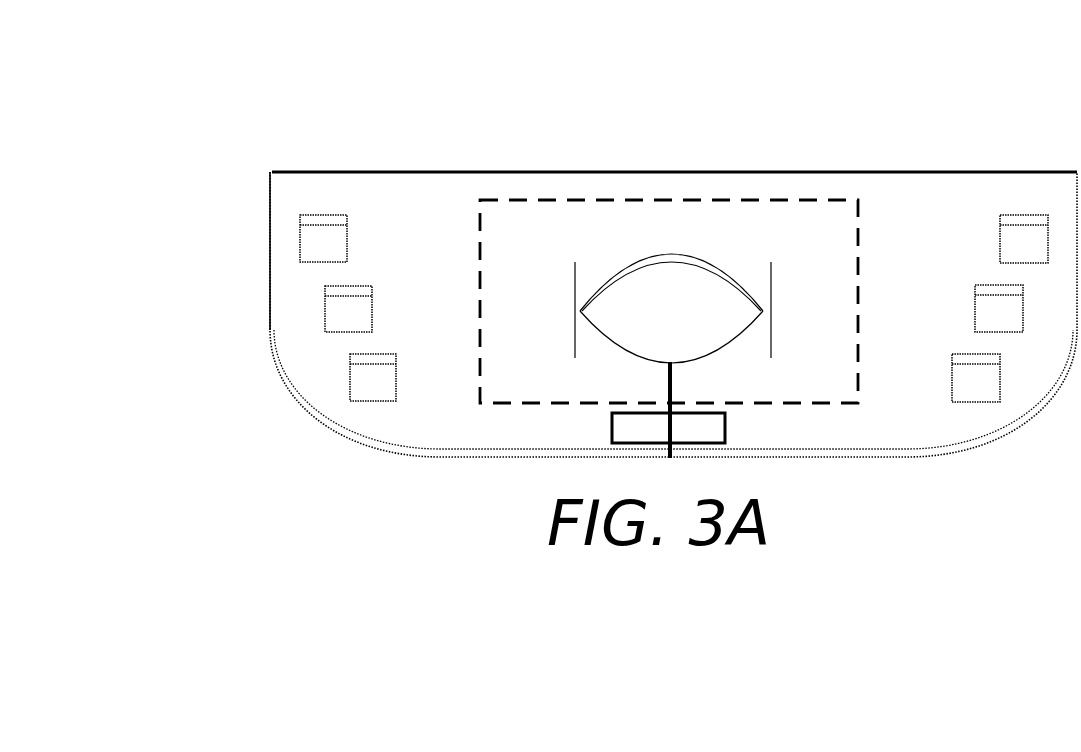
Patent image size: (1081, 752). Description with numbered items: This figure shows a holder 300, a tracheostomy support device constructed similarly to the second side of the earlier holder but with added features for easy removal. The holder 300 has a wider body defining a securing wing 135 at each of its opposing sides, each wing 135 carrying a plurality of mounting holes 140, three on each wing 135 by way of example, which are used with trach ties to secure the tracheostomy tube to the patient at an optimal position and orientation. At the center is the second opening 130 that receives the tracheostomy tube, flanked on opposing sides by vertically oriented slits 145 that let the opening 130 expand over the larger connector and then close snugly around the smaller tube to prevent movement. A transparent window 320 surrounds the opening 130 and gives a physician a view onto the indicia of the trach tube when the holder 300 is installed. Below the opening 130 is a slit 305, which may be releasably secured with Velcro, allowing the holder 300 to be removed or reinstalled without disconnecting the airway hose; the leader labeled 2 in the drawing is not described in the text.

The holder 300 is at (624, 250).
The securing wing 135 is at (254, 197).
The transparent window 320 is at (814, 194).
The second opening 130 is at (690, 288).
The slits 145 is at (771, 300).
The mounting holes 140 is at (357, 373).
The slit 305 is at (673, 428).
The mounting stem 2 is at (725, 428).